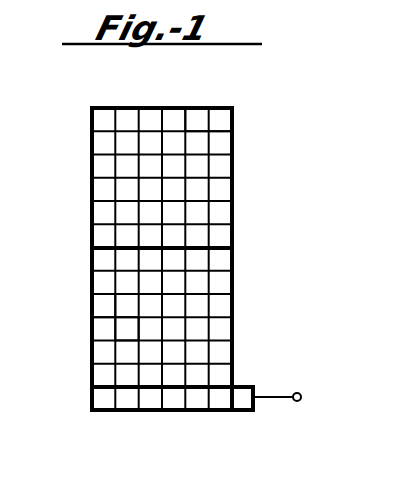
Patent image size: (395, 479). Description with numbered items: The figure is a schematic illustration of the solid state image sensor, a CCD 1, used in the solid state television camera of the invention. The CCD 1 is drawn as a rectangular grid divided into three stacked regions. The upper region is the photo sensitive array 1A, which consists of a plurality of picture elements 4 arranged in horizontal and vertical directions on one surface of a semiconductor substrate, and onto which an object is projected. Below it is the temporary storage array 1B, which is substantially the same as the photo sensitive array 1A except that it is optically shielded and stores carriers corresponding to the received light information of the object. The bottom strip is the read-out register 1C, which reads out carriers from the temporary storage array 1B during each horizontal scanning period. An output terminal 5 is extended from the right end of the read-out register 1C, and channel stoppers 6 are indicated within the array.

The CCD 1 is at (170, 290).
The photo sensitive array 1A is at (233, 187).
The temporary storage array 1B is at (233, 322).
The read-out register 1C is at (174, 411).
The picture elements 4 is at (197, 122).
The output terminal 5 is at (300, 402).
The channel stoppers 6 is at (137, 324).